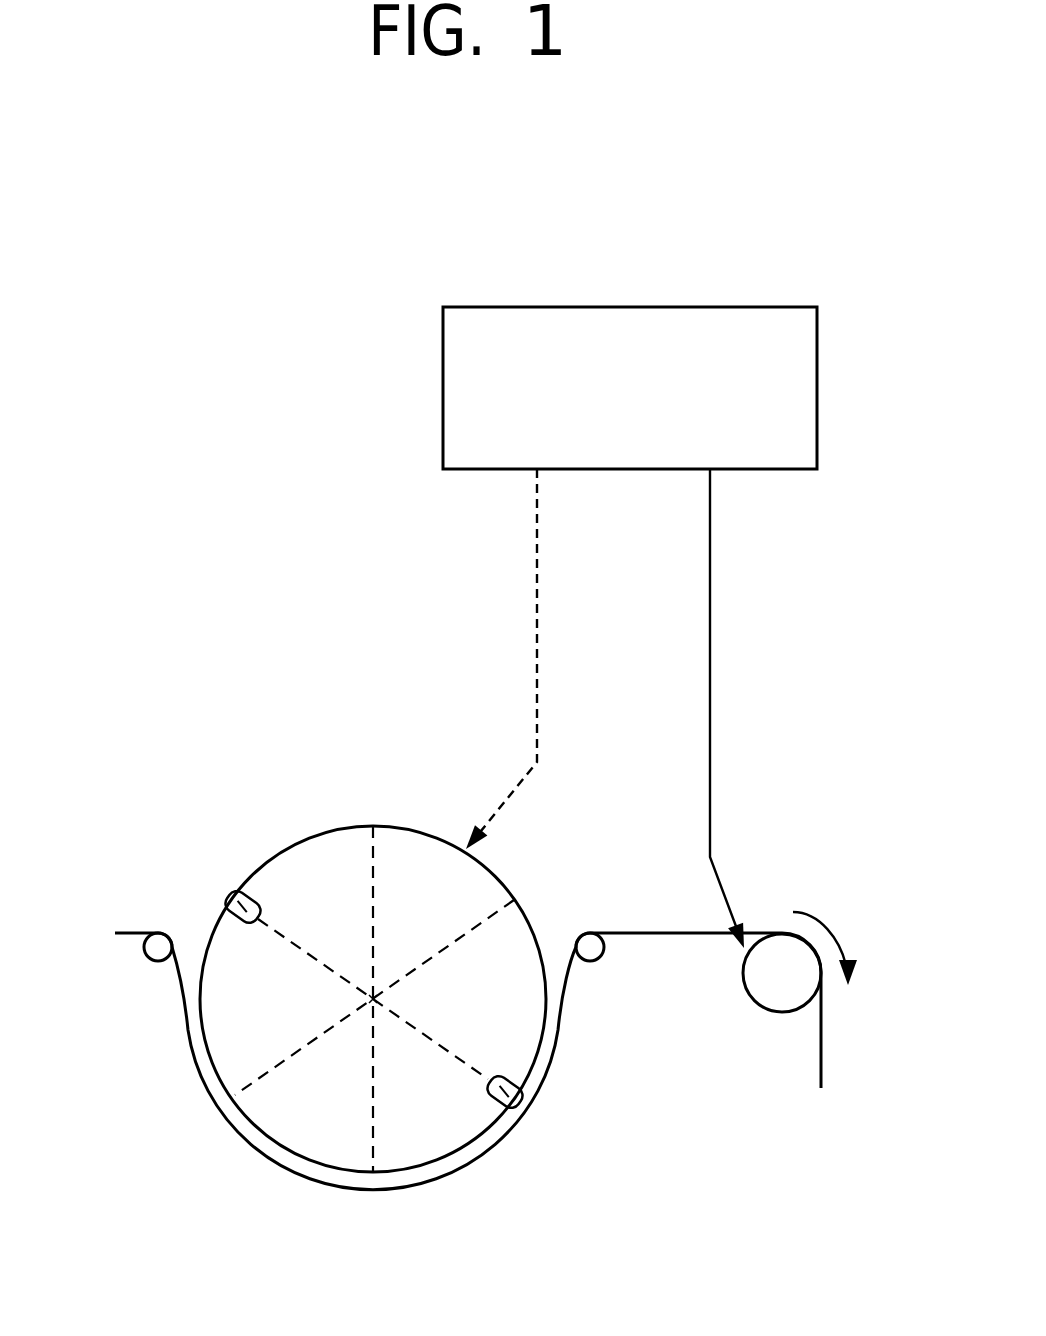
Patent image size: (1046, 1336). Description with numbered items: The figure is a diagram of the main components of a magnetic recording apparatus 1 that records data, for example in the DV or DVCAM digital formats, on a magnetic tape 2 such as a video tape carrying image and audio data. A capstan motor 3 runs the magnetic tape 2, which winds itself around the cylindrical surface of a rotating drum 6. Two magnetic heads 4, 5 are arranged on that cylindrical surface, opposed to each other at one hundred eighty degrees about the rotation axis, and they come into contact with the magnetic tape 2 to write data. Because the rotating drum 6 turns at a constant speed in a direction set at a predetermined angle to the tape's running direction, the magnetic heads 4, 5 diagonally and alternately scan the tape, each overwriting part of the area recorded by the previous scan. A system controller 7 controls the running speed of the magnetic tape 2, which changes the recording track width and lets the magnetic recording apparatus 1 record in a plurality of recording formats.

The magnetic recording apparatus 1 is at (252, 378).
The magnetic tape 2 is at (648, 933).
The capstan motor 3 is at (769, 1012).
The magnetic head 4 is at (230, 895).
The magnetic head 5 is at (493, 1097).
The rotating drum 6 is at (292, 1102).
The system controller 7 is at (757, 307).